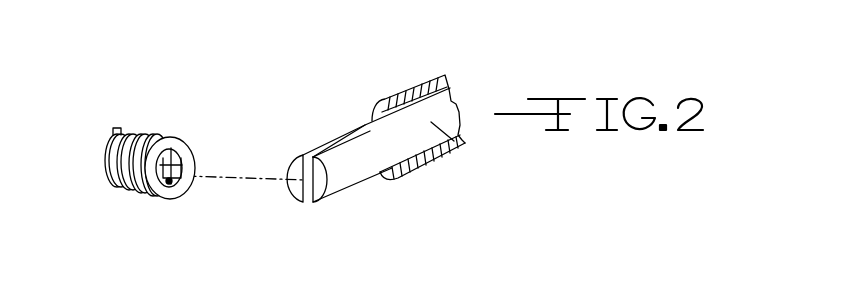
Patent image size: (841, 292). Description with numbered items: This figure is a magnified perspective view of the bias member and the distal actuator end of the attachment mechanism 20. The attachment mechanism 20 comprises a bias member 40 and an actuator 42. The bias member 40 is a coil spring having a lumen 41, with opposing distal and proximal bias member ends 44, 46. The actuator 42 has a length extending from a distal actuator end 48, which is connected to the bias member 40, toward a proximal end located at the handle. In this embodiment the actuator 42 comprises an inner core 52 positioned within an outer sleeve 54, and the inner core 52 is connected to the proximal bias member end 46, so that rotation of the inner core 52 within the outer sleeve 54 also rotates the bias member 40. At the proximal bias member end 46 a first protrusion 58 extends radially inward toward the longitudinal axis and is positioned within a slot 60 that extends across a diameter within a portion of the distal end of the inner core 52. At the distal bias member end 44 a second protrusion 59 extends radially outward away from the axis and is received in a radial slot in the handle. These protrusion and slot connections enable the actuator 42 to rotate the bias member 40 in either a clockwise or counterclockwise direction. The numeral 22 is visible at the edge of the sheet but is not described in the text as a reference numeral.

The attachment mechanism 20 is at (255, 92).
The housing 22 is at (658, 6).
The bias member 40 is at (135, 162).
The lumen 41 is at (180, 187).
The actuator 42 is at (466, 147).
The distal bias member end 44 is at (108, 157).
The proximal bias member end 46 is at (188, 166).
The distal actuator end 48 is at (303, 134).
The inner core 52 is at (391, 129).
The outer sleeve 54 is at (418, 90).
The first protrusion 58 is at (171, 148).
The second protrusion 59 is at (117, 129).
The slot 60 is at (331, 137).